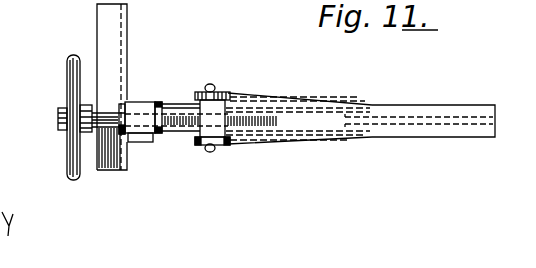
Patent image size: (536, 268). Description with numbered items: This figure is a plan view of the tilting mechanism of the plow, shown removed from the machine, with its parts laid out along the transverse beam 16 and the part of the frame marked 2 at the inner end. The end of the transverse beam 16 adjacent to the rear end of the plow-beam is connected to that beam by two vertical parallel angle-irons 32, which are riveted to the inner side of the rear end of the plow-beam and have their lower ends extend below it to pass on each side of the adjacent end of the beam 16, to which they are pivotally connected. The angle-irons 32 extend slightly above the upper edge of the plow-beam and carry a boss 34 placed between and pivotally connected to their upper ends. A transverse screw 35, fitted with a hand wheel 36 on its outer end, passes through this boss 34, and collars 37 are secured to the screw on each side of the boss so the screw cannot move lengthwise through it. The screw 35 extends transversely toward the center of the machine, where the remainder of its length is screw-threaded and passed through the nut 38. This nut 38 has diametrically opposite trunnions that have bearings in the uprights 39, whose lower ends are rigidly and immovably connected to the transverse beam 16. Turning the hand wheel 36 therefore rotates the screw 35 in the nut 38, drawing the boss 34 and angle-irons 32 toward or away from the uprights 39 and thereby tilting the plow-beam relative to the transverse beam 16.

The post 2 is at (122, 54).
The transverse beam 16 is at (368, 106).
The vertical parallel angle-irons 32 is at (127, 163).
The boss 34 is at (139, 134).
The transverse screw 35 is at (177, 112).
The hand wheel 36 is at (69, 70).
The collars 37 is at (124, 106).
The nut 38 is at (208, 107).
The uprights 39 is at (198, 142).